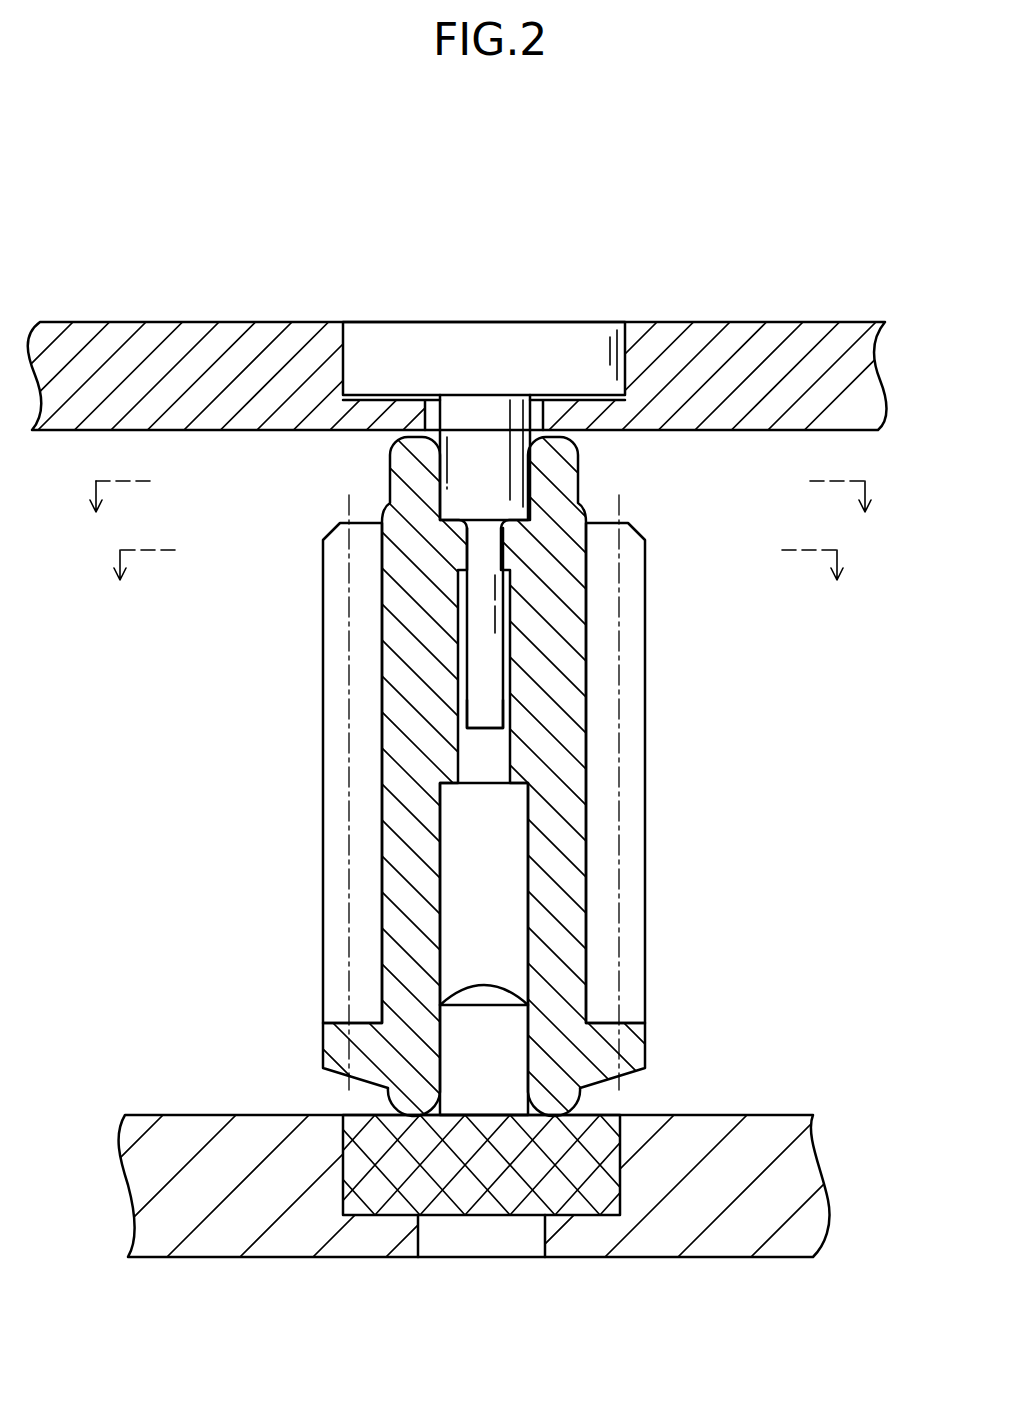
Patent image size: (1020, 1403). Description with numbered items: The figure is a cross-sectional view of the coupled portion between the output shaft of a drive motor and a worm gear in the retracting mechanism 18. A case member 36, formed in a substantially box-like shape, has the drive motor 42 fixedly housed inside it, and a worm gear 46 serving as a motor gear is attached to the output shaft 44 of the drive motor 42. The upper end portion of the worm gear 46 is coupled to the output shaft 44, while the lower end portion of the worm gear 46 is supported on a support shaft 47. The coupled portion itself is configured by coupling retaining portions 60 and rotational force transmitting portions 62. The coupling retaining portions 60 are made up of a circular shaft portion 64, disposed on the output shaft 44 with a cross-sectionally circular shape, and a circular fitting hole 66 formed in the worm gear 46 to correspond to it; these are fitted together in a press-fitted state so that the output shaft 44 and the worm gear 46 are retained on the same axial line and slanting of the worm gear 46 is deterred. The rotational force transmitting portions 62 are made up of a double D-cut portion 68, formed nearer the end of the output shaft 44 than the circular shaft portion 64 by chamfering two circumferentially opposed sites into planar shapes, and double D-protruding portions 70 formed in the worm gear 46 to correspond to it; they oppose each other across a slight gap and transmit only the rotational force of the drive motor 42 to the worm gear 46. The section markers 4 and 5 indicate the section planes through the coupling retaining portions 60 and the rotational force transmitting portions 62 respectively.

The retracting mechanism 18 is at (140, 218).
The case member 36 is at (812, 322).
The drive motor 42 is at (353, 365).
The output shaft 44 is at (475, 410).
The worm gear 46 is at (645, 853).
The support shaft 47 is at (507, 1048).
The coupling retaining portions 60 is at (717, 437).
The rotational force transmitting portions 62 is at (718, 632).
The circular shaft portion 64 is at (515, 463).
The circular fitting hole 66 is at (522, 502).
The double D-cut portion 68 is at (492, 655).
The double D-protruding portions 70 is at (513, 698).
The section line 4- 4 is at (478, 517).
The section line 5- 5 is at (477, 586).